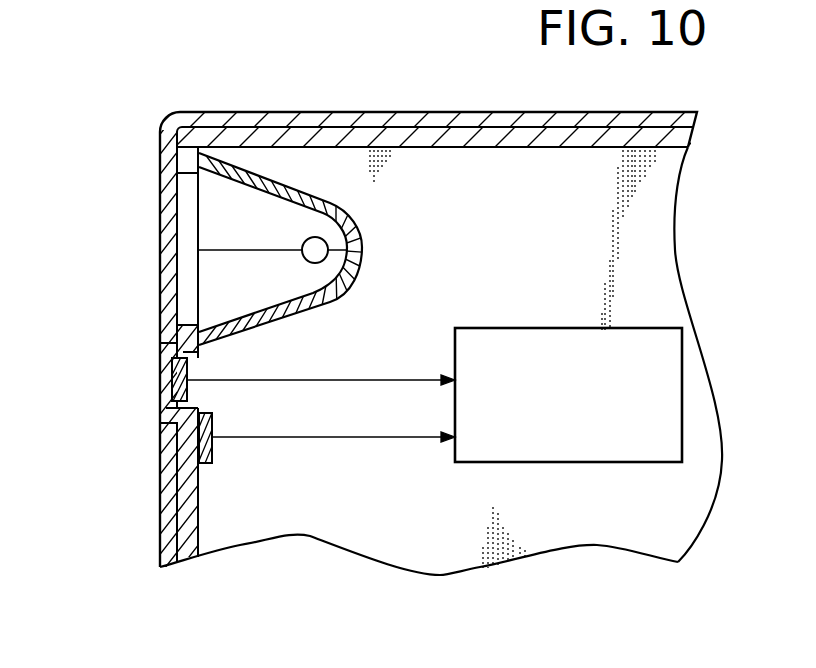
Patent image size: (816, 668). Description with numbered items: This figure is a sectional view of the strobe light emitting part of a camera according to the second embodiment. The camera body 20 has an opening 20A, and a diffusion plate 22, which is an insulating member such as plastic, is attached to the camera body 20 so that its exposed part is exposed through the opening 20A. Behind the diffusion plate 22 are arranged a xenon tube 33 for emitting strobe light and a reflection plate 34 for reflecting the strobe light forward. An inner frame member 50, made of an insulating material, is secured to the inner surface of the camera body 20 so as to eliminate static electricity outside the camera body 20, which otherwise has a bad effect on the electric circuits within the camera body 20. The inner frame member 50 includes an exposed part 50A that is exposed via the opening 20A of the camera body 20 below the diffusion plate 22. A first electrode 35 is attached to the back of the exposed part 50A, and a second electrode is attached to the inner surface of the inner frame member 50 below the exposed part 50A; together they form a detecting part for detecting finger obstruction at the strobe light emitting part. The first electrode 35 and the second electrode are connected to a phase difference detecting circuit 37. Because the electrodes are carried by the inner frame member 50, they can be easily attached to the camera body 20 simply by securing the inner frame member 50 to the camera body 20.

The camera body 20 is at (160, 132).
The opening 20A is at (160, 174).
The diffusion plate 22 is at (160, 252).
The xenon tube 33 is at (313, 247).
The reflection plate 34 is at (363, 268).
The first electrode 35 is at (163, 372).
The phase difference detecting circuit 37 is at (560, 328).
The inner frame member 50 is at (448, 150).
The exposed part 50A is at (163, 410).